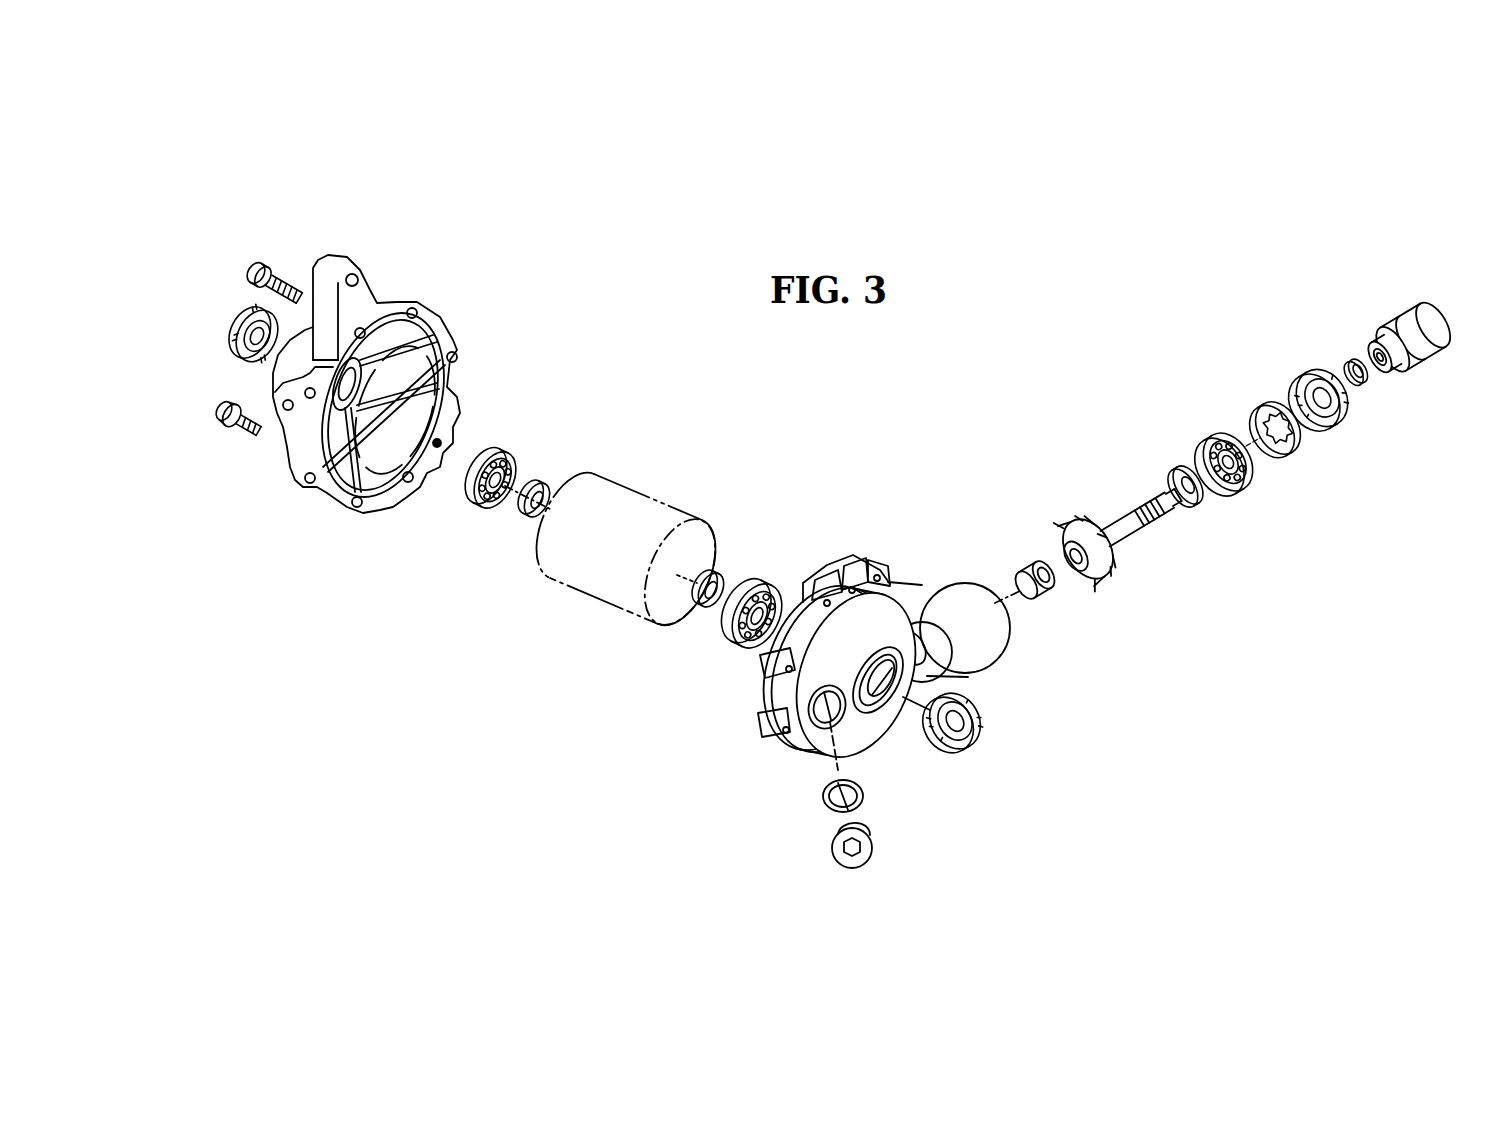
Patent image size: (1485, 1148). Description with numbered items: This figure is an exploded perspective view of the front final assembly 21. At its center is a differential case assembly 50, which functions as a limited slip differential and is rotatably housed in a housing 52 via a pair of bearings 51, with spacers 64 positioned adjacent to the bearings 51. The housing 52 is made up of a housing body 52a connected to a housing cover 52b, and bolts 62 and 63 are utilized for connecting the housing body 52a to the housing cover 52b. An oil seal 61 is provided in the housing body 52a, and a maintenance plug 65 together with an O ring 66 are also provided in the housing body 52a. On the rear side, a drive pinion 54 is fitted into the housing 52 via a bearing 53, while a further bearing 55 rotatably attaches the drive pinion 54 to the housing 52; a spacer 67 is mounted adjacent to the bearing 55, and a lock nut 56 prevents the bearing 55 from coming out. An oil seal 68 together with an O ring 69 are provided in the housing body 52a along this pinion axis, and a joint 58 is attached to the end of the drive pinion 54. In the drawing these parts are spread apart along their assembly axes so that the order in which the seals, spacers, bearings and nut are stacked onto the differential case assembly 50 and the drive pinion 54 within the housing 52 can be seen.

The front final assembly 21 is at (645, 333).
The differential case assembly 50 is at (620, 610).
The bearings 51 is at (484, 506).
The housing 52 is at (765, 745).
The housing body 52a is at (882, 737).
The housing cover 52b is at (278, 467).
The bearing 53 is at (1050, 592).
The drive pinion 54 is at (1127, 538).
The bearing 55 is at (1243, 487).
The lock nut 56 is at (1298, 455).
The joint 58 is at (1423, 363).
The oil seal 61 is at (246, 343).
The bolt 62 is at (252, 270).
The bolt 63 is at (220, 408).
The spacers 64 is at (547, 487).
The maintenance plug 65 is at (828, 850).
The O ring 66 is at (822, 798).
The spacer 67 is at (1176, 470).
The oil seal 68 is at (1348, 416).
The O ring 69 is at (1353, 362).